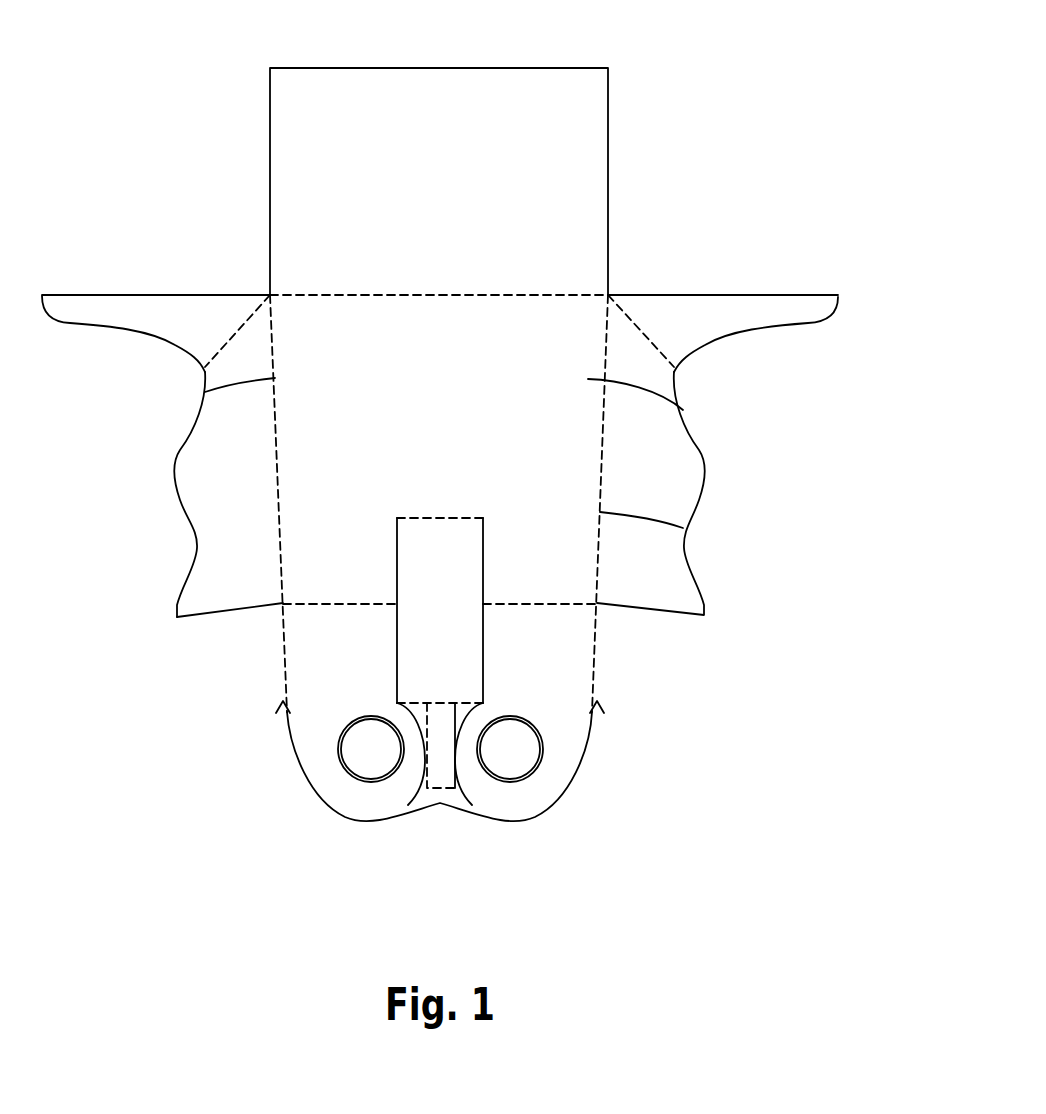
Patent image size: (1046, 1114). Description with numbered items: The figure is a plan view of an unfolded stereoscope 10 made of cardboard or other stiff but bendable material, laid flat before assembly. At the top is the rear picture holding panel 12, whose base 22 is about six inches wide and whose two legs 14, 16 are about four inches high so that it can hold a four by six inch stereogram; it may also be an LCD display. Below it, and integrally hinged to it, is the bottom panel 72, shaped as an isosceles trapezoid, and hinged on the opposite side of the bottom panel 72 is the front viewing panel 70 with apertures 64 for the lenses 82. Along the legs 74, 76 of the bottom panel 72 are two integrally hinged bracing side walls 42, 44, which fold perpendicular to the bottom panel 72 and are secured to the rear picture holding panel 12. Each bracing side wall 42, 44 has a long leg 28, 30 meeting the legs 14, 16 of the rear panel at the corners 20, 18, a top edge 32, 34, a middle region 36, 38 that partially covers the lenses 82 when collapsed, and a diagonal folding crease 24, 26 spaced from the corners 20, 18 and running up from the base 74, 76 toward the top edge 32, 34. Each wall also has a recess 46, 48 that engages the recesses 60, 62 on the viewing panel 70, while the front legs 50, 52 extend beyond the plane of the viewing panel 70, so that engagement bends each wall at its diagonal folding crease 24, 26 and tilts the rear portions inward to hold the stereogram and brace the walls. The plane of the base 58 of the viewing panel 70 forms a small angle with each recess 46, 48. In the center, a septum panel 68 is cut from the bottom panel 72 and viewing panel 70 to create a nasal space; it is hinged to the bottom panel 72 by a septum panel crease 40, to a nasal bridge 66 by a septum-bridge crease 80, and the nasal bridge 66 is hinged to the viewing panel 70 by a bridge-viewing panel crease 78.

The stereoscope 10 is at (738, 118).
The rear picture holding panel 12 is at (588, 97).
The leg of rear picture holding panel 14 is at (608, 180).
The leg of rear picture holding panel 16 is at (270, 180).
The corner 18 is at (608, 295).
The corner 20 is at (270, 295).
The base of rear picture holding panel 22 is at (340, 295).
The diagonal folding crease 24 is at (237, 317).
The diagonal folding crease 26 is at (643, 320).
The long leg of bracing wall 28 is at (157, 295).
The long leg of bracing wall 30 is at (723, 295).
The top edge of bracing side wall 32 is at (205, 367).
The top edge of bracing side wall 34 is at (675, 367).
The middle region of bracing wall 36 is at (180, 460).
The middle region of bracing wall 38 is at (700, 465).
The septum panel crease 40 is at (440, 517).
The bracing side wall 42 is at (207, 543).
The bracing side wall 44 is at (672, 578).
The recess of bracing side wall 46 is at (172, 614).
The recess of bracing side wall 48 is at (677, 613).
The front leg of bracing side wall 50 is at (207, 617).
The front leg of bracing side wall 52 is at (673, 615).
The base of viewing panel 58 is at (323, 604).
The recess on viewing panel 60 is at (283, 705).
The recess on viewing panel 62 is at (597, 705).
The aperture 64 is at (371, 752).
The nasal bridge 66 is at (440, 703).
The septum panel 68 is at (424, 610).
The front viewing panel 70 is at (573, 660).
The bottom panel 72 is at (683, 413).
The leg of bottom panel 74 is at (205, 392).
The leg of bottom panel 76 is at (683, 528).
The bridge-viewing panel crease 78 is at (440, 788).
The septum-bridge crease 80 is at (440, 758).
The lens 82 is at (338, 749).